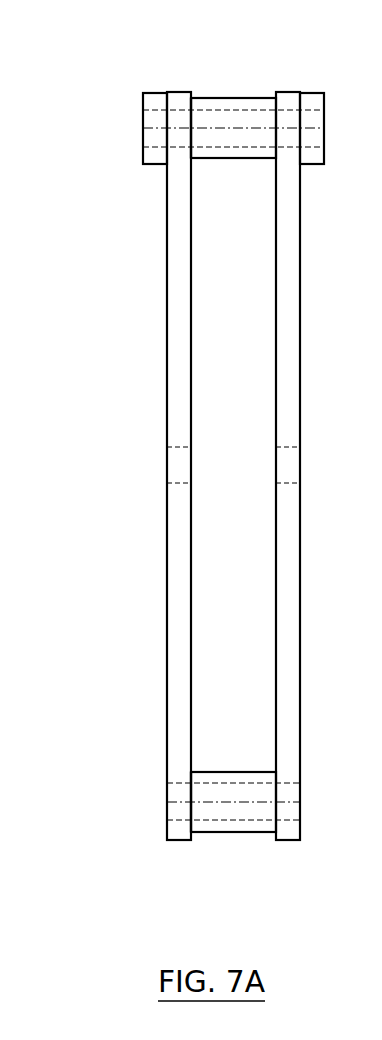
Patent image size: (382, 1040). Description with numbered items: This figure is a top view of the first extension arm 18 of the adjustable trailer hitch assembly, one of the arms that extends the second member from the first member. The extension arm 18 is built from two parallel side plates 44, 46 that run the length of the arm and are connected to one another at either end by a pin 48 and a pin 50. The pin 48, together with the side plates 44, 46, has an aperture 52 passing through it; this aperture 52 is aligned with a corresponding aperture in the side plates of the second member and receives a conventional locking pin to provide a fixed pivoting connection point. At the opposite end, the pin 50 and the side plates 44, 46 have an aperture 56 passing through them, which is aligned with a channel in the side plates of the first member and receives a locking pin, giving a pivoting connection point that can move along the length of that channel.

The extension arm 18 is at (135, 248).
The side plate 44 is at (293, 562).
The side plate 46 is at (173, 392).
The pin 48 is at (245, 772).
The pin 50 is at (247, 107).
The aperture 52 is at (212, 783).
The aperture 56 is at (212, 110).